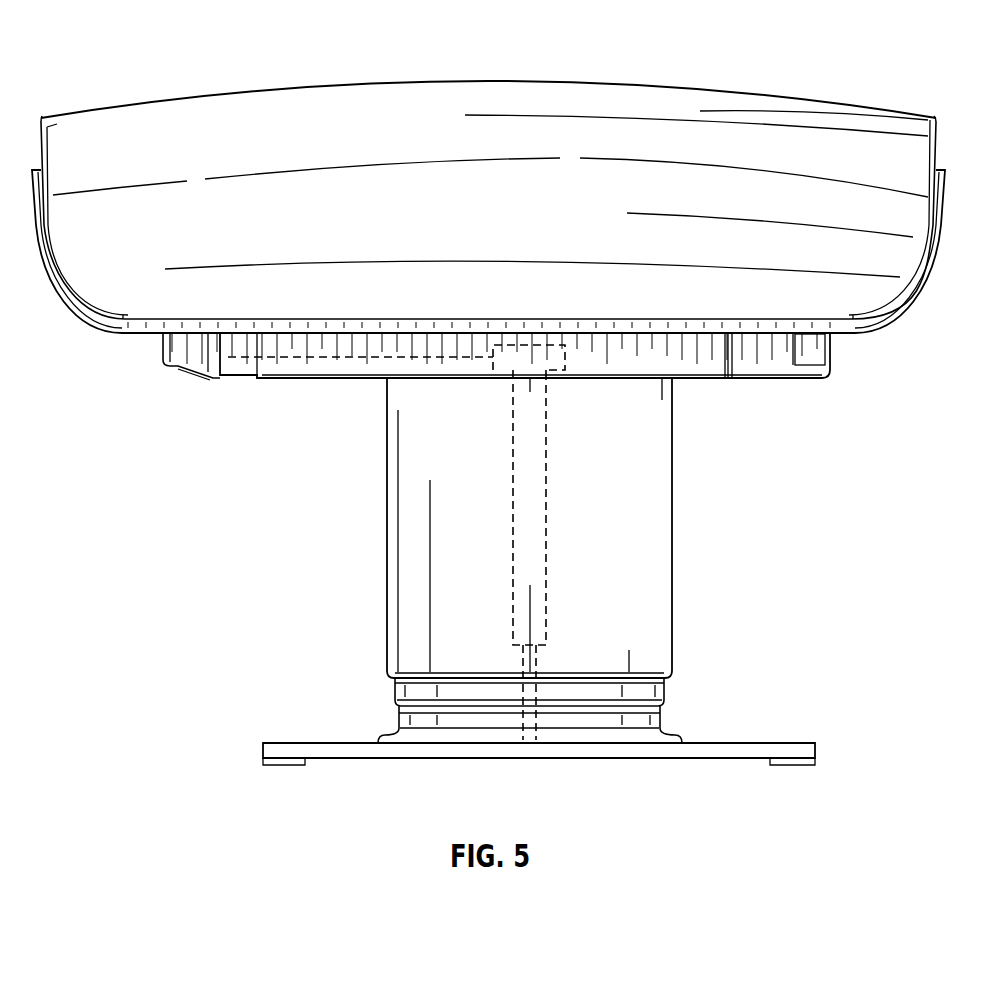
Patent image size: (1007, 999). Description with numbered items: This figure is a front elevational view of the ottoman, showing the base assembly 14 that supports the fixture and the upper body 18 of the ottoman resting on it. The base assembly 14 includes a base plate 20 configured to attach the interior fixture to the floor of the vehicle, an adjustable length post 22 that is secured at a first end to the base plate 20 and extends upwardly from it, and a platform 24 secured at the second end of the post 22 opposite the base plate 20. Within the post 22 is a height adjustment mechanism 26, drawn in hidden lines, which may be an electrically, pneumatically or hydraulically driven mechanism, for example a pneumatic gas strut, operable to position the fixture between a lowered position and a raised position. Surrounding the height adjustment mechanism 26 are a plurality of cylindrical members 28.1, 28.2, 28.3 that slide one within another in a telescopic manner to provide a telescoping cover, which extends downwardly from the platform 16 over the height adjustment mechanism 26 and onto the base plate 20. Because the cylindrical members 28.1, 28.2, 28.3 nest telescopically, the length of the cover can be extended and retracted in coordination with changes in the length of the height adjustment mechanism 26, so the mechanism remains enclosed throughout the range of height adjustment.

The base assembly 14 is at (253, 724).
The platform 16 is at (784, 390).
The hood 18 is at (290, 54).
The base plate 20 is at (605, 760).
The adjustable length post 22 is at (272, 488).
The platform 24 is at (620, 362).
The height adjustment mechanism 26 is at (548, 468).
The cylindrical member 28.1 is at (663, 638).
The cylindrical member 28.2 is at (664, 697).
The cylindrical member 28.3 is at (660, 733).